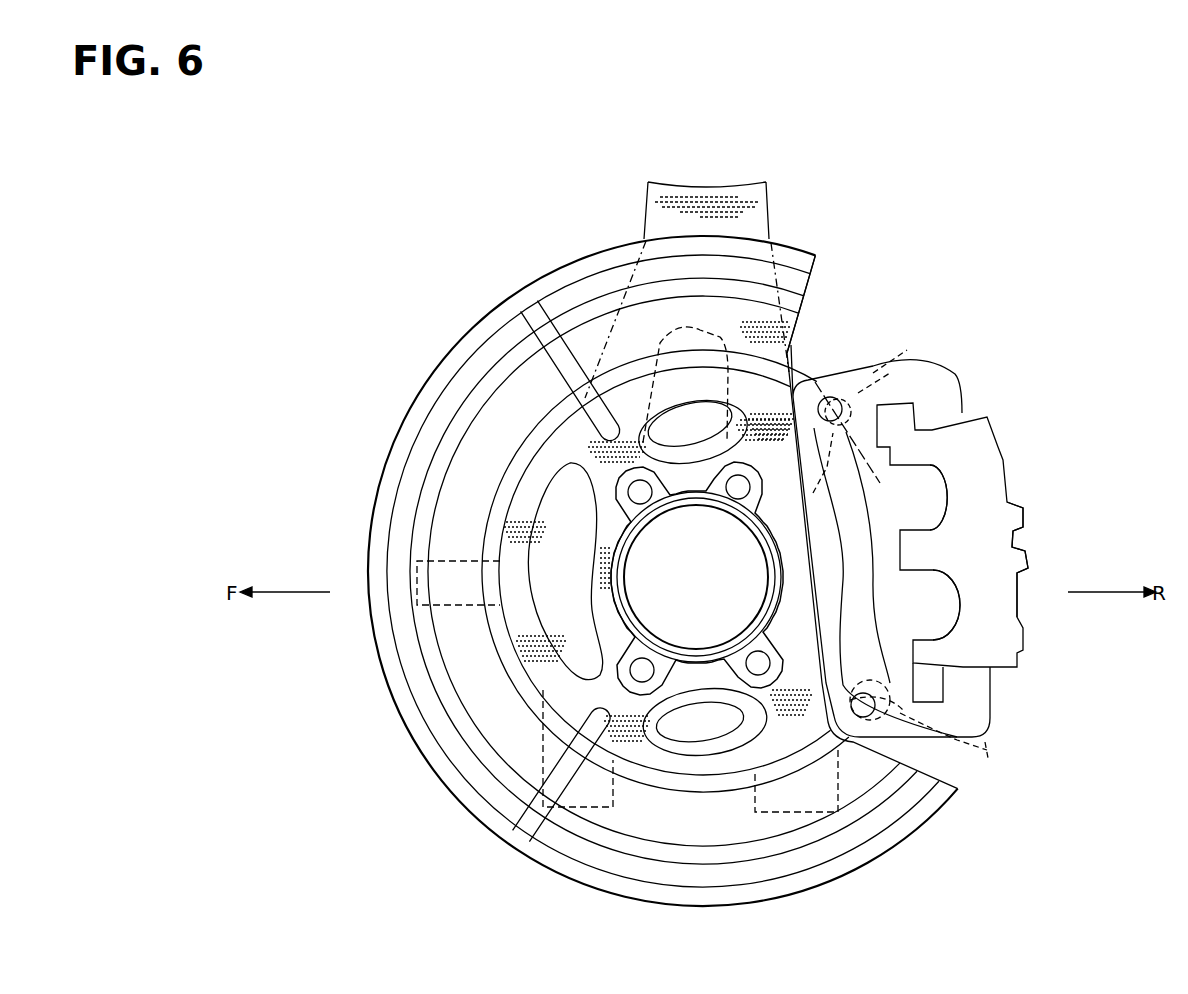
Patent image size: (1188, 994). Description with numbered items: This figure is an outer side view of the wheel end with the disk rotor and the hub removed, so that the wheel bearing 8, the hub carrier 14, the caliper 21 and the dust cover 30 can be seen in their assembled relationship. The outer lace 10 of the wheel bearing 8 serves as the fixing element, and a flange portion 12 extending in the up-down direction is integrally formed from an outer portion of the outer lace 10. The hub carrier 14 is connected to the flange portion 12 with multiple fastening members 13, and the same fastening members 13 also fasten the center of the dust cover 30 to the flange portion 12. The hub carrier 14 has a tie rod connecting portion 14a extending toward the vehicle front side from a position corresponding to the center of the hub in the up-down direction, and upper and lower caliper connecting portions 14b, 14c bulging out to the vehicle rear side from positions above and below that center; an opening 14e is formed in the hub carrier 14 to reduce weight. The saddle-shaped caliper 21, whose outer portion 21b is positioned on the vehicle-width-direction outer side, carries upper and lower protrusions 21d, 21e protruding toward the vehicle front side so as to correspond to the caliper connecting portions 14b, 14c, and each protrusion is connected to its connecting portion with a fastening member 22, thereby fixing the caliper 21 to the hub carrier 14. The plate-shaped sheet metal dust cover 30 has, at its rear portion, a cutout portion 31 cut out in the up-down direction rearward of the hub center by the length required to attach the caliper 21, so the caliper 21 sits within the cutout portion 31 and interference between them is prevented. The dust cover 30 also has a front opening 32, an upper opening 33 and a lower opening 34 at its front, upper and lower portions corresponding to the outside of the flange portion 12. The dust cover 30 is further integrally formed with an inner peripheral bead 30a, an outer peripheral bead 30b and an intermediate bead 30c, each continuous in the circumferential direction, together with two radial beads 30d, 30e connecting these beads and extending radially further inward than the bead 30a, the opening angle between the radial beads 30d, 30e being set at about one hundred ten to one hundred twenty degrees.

The hub bearing 8 is at (773, 558).
The hub 10 is at (773, 583).
The hub flange 12 is at (761, 490).
The hub bolt hole 13 is at (640, 493).
The knuckle 14 is at (768, 206).
The knuckle arm (front) 14a is at (440, 560).
The knuckle arm (upper caliper mount) 14b is at (905, 363).
The knuckle arm (lower caliper mount) 14c is at (966, 741).
The knuckle arm (upper) 14e is at (666, 331).
The brake caliper 21 is at (1005, 446).
The caliper body outer portion 21b is at (1018, 542).
The caliper mounting portion (upper) 21d is at (815, 386).
The caliper mounting portion (lower) 21e is at (830, 774).
The caliper mounting bolt 22 is at (855, 452).
The backing plate 30 is at (420, 383).
The backing plate inner portion 30a is at (533, 423).
The backing plate raised band 30b is at (468, 330).
The backing plate outer flange 30c is at (450, 431).
The upper reinforcing rib 30d is at (573, 292).
The lower reinforcing rib 30e is at (520, 806).
The backing plate cut edge 31 is at (820, 274).
The backing plate opening 32 is at (533, 612).
The upper opening 33 is at (689, 409).
The lower opening 34 is at (688, 745).